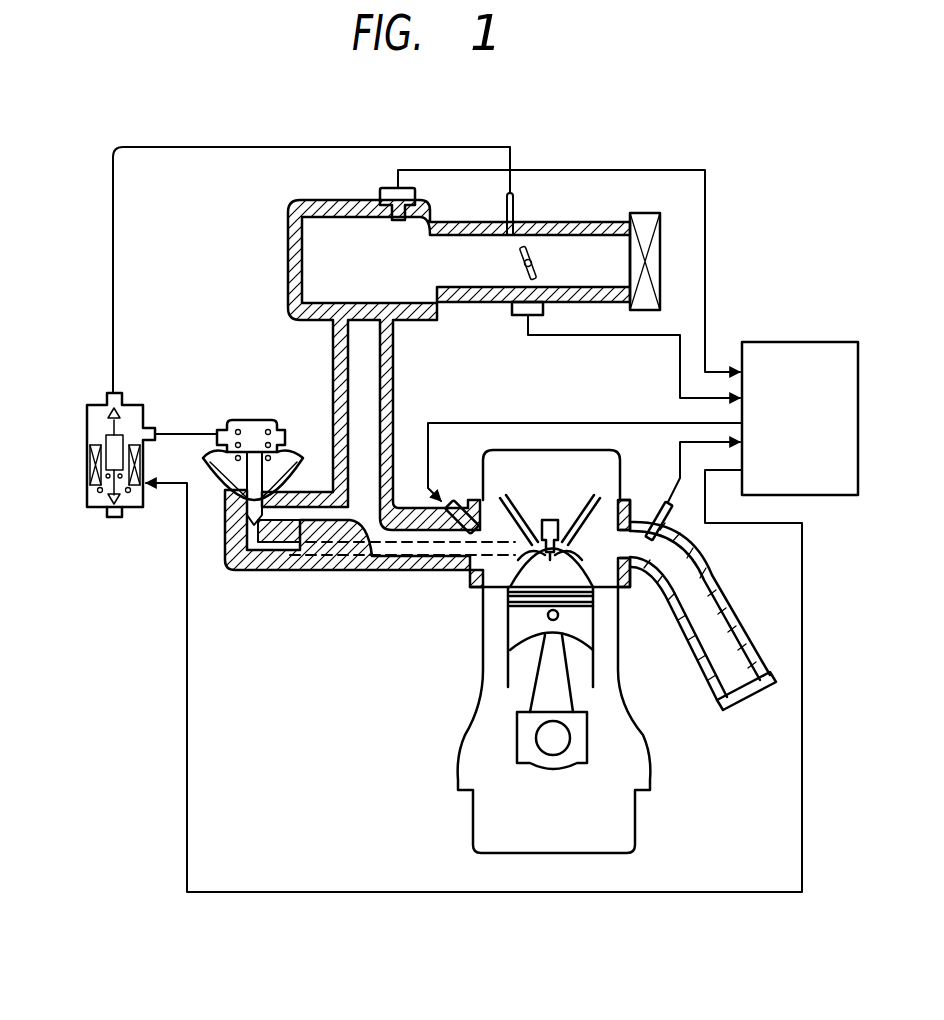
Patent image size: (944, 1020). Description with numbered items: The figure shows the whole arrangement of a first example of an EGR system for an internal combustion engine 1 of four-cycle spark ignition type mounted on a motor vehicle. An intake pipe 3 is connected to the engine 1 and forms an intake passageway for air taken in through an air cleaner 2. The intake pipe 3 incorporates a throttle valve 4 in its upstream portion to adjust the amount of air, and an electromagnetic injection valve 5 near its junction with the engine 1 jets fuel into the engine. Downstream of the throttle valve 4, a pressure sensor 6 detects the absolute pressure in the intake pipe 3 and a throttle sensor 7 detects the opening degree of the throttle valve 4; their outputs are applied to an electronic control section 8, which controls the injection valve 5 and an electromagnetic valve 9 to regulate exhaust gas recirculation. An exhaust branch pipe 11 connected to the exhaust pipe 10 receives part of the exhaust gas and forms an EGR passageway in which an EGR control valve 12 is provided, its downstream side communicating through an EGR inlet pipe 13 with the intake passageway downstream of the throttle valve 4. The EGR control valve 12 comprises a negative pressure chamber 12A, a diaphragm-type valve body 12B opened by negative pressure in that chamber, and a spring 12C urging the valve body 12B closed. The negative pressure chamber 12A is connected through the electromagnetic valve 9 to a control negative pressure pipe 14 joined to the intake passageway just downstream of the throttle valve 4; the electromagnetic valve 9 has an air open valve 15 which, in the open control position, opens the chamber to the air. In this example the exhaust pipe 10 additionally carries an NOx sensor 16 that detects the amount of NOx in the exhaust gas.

The internal combustion engine 1 is at (480, 625).
The air cleaner 2 is at (633, 213).
The intake pipe 3 is at (290, 262).
The throttle valve 4 is at (518, 260).
The electromagnetic injection valve 5 is at (458, 500).
The pressure sensor 6 is at (385, 190).
The throttle sensor 7 is at (515, 312).
The electronic control section 8 is at (792, 342).
The electromagnetic valve 9 is at (111, 465).
The exhaust pipe 10 is at (683, 592).
The exhaust branch pipe 11 is at (333, 555).
The EGR control valve 12 is at (227, 445).
The negative pressure chamber 12A is at (252, 428).
The valve body 12B is at (207, 490).
The spring 12C is at (268, 432).
The EGR inlet pipe 13 is at (305, 512).
The control negative pressure pipe 14 is at (507, 210).
The air open valve 15 is at (105, 518).
The NOx sensor 16 is at (658, 508).